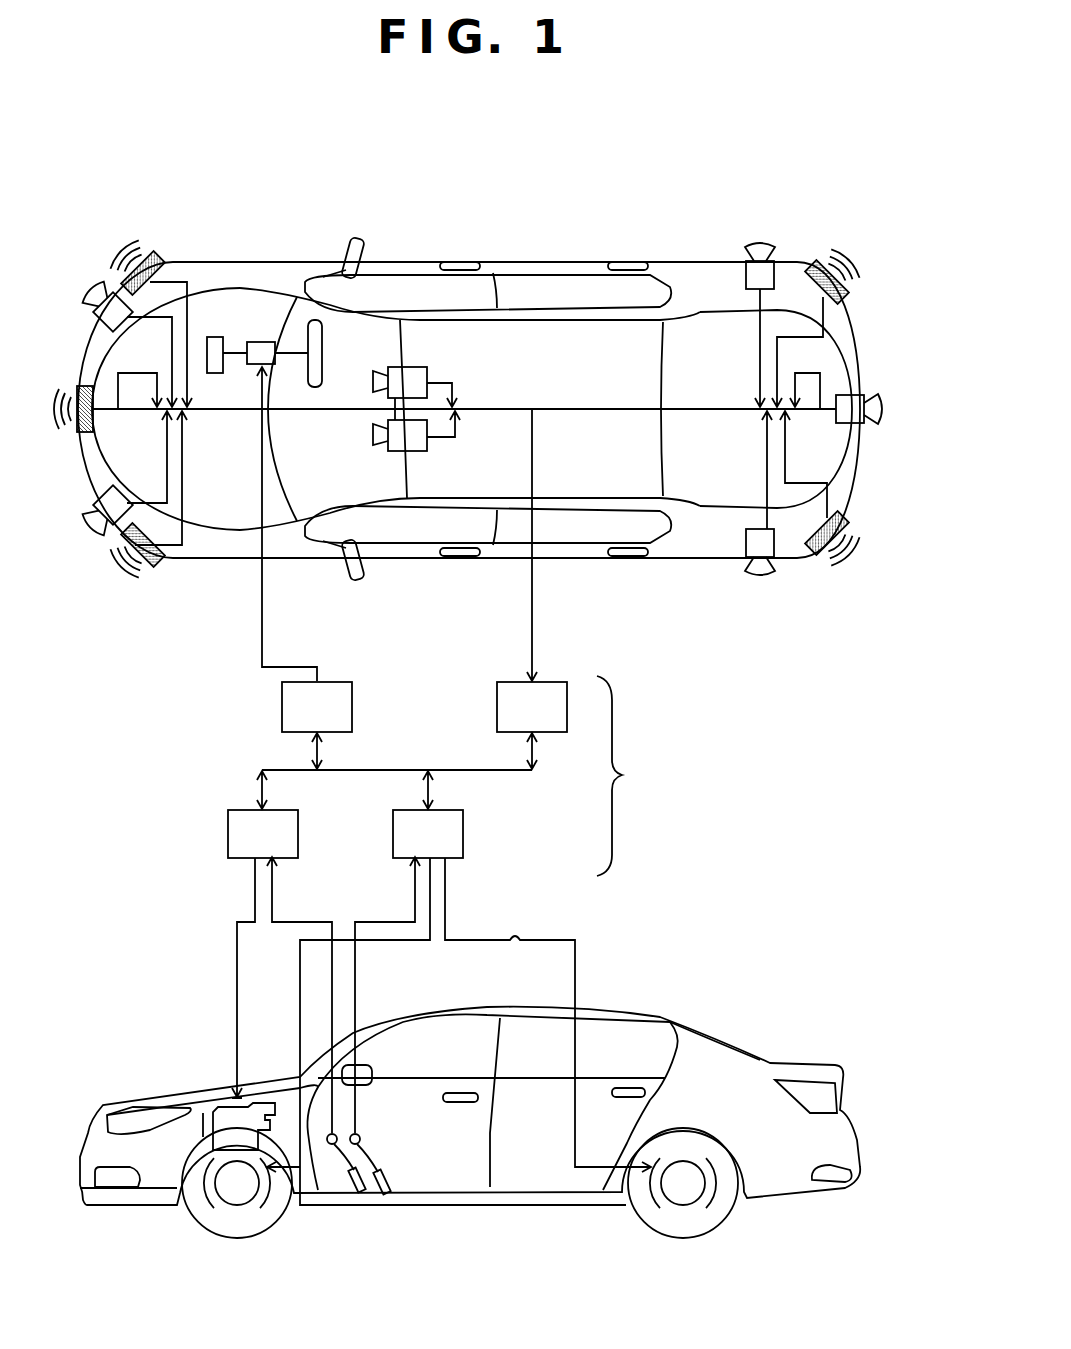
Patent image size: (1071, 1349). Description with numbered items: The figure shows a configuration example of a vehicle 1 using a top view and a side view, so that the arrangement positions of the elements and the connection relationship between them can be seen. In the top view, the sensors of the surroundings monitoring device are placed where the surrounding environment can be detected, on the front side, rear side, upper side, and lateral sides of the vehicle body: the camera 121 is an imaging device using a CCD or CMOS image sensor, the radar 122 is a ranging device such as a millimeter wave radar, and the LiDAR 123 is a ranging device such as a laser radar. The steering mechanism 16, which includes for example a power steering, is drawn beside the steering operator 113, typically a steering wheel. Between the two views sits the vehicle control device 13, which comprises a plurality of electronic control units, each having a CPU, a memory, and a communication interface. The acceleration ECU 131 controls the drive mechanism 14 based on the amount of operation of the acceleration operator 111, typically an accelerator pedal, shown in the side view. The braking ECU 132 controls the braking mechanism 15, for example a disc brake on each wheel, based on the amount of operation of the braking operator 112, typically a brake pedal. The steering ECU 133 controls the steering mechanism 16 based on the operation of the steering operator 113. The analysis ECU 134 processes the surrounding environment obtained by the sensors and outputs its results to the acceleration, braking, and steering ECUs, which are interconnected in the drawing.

The vehicle 1 is at (682, 213).
The vehicle control device 13 is at (443, 776).
The acceleration ECU 131 is at (284, 846).
The braking ECU 132 is at (449, 846).
The steering ECU 133 is at (338, 719).
The analysis ECU 134 is at (553, 719).
The drive mechanism 14 is at (215, 1107).
The braking mechanism 15 is at (240, 1205).
The steering mechanism 16 is at (262, 341).
The acceleration operator 111 is at (358, 1188).
The braking operator 112 is at (385, 1190).
The steering operator 113 is at (322, 335).
The camera 121 is at (427, 368).
The radar 122 is at (152, 262).
The LiDAR 123 is at (112, 295).